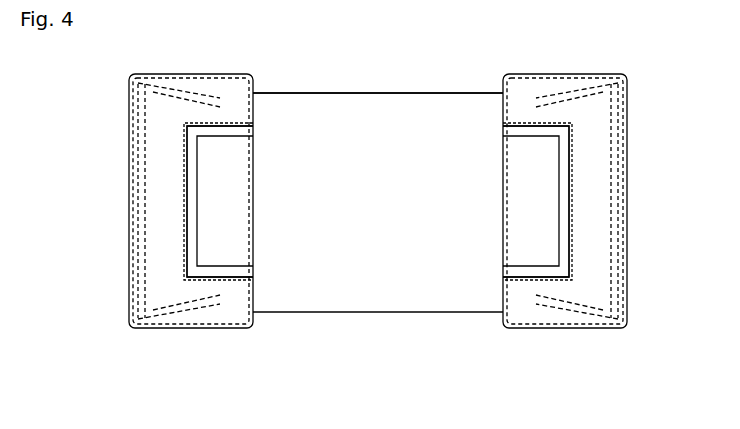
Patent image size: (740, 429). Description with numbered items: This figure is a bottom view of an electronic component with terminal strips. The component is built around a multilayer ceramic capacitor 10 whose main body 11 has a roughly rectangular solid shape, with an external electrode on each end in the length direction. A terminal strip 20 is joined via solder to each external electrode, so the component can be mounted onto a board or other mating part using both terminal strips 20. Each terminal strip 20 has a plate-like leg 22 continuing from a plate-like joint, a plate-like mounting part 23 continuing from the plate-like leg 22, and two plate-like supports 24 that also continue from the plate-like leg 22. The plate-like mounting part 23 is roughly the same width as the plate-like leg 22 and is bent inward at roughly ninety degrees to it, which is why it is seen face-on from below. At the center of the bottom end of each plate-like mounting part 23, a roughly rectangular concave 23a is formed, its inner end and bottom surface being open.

The multilayer ceramic capacitor 10 is at (318, 89).
The main body 11 is at (400, 108).
The terminal strip 20 is at (127, 133).
The plate-like leg 22 is at (137, 200).
The plate-like mounting part 23 is at (230, 322).
The concave 23a is at (243, 202).
The plate-like support 24 is at (188, 72).